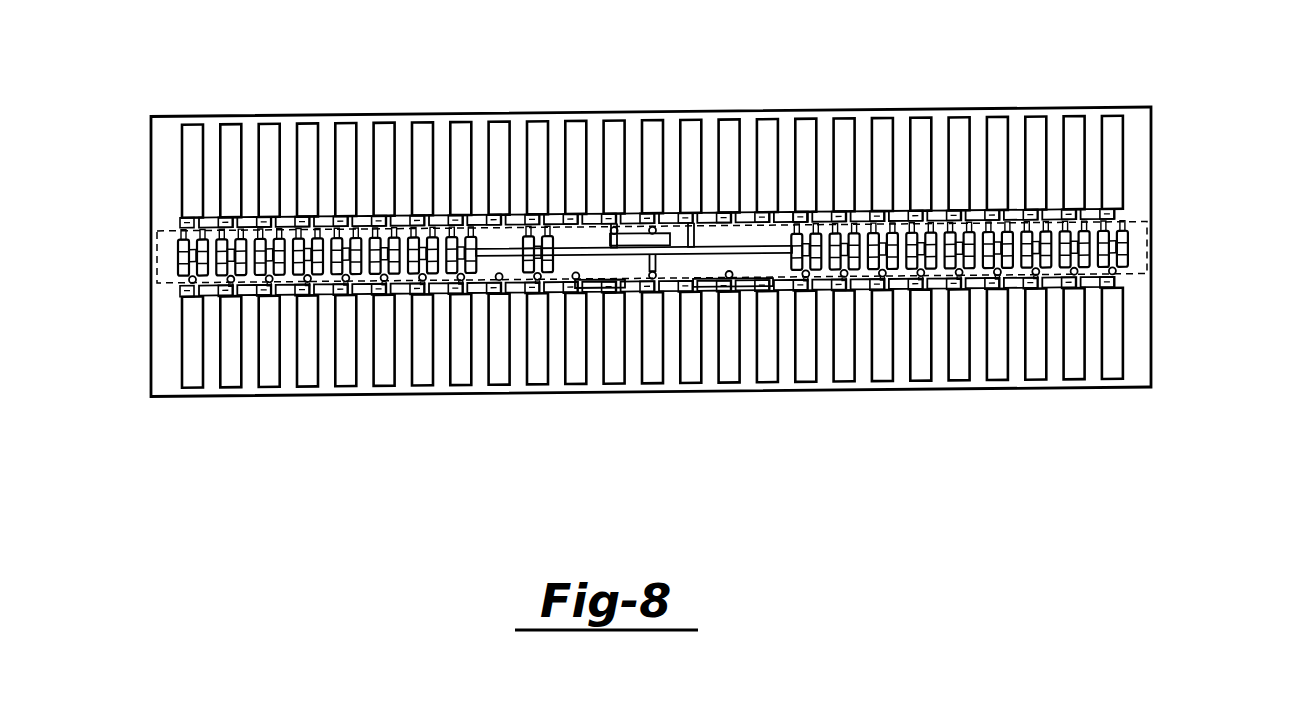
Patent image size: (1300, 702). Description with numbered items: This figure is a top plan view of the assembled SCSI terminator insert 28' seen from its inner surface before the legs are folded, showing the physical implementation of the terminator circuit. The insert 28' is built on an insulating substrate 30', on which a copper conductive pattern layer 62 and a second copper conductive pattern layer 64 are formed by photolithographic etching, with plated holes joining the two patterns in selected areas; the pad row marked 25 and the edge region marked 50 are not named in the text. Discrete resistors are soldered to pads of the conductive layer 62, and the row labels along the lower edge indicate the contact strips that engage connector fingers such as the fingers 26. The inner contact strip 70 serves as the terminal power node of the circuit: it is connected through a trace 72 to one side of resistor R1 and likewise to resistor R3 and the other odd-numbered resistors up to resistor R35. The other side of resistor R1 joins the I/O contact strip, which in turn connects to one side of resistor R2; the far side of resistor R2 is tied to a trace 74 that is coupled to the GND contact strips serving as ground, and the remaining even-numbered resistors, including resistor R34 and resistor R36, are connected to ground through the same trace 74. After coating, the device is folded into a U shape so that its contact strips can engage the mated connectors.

The upper row of contact pads 25 is at (642, 118).
The fingers of the female connector 26 is at (661, 383).
The SCSI terminator insert 28' is at (668, 276).
The insulating substrate 30' is at (705, 251).
The signal designations 50 is at (645, 455).
The upper conductive pattern layer 62 is at (1147, 270).
The inner conductive pattern layer 64 is at (1113, 365).
The inner contact strip 70 is at (652, 376).
The trace 72 is at (583, 250).
The trace 74 is at (813, 220).
The resistor R1 is at (173, 261).
The resistor R2 is at (180, 277).
The resistor R3 is at (182, 272).
The resistor R34 is at (1120, 226).
The resistor R35 is at (1097, 245).
The resistor R36 is at (1127, 248).